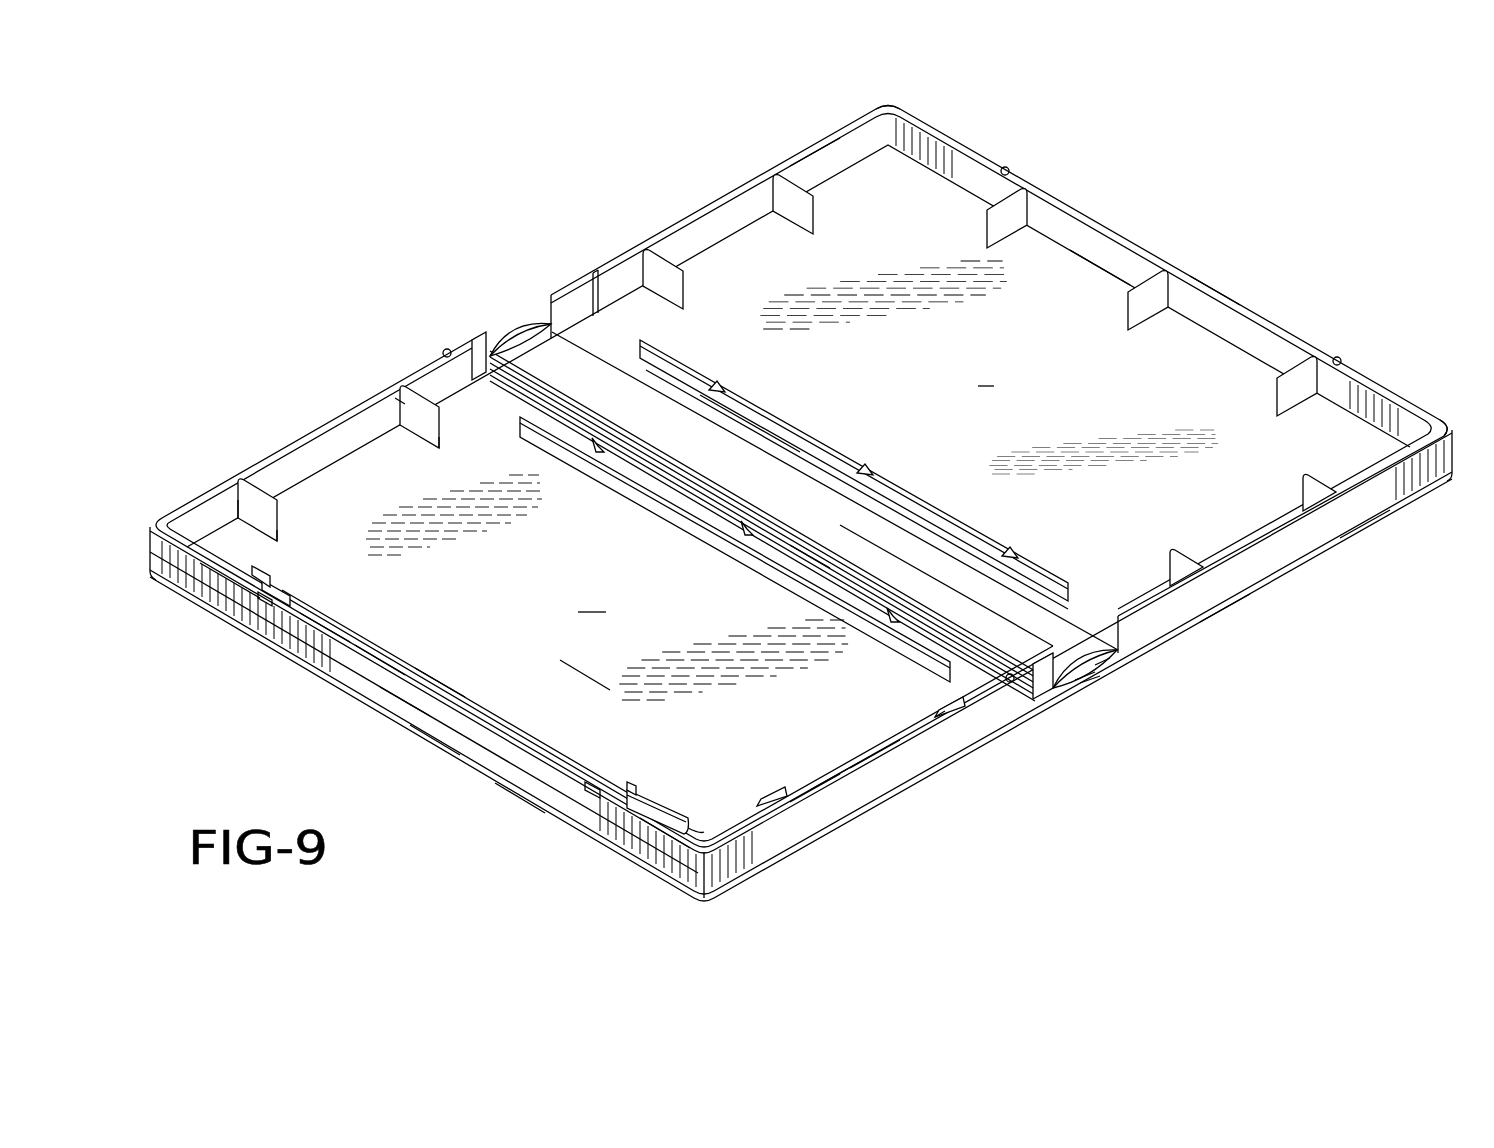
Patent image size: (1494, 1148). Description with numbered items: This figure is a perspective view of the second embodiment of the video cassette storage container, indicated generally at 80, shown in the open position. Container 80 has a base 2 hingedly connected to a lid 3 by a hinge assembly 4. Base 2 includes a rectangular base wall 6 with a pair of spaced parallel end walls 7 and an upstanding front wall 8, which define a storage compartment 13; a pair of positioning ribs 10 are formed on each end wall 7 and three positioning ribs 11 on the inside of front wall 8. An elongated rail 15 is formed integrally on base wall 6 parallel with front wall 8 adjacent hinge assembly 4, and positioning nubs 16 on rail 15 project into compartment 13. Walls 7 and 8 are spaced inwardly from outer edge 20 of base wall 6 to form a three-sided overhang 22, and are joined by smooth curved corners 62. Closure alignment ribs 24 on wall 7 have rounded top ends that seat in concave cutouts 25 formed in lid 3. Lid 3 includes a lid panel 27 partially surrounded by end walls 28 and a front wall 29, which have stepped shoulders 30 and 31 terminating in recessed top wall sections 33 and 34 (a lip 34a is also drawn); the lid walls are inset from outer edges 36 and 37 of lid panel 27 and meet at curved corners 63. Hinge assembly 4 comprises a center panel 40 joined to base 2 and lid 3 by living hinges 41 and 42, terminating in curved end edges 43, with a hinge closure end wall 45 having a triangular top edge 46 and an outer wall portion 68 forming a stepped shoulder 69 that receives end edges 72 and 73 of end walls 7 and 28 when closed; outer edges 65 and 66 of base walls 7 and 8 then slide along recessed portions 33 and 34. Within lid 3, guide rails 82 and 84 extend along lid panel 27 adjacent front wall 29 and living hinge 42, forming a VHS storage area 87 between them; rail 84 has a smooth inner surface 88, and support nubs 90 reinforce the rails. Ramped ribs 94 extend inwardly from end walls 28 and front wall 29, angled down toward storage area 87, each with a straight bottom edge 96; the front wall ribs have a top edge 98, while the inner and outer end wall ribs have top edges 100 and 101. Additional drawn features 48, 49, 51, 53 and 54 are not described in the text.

The base 2 is at (692, 208).
The lid 3 is at (332, 413).
The hinge assembly 4 is at (785, 475).
The base wall 6 is at (986, 374).
The end wall 7 is at (815, 160).
The front wall 8 is at (1385, 405).
The positioning ribs 10 is at (800, 215).
The positioning ribs 11 is at (1000, 230).
The storage compartment 13 is at (1100, 250).
The rail 15 is at (778, 440).
The positioning nubs 16 is at (719, 385).
The outer edge 20 is at (1365, 510).
The overhang 22 is at (1225, 605).
The closure alignment ribs 24 is at (596, 290).
The concave cutouts 25 is at (447, 352).
The lid panel 27 is at (592, 600).
The end wall 28 is at (330, 455).
The front wall 29 is at (668, 860).
The stepped shoulder 30 is at (835, 790).
The stepped shoulder 31 is at (323, 630).
The top wall section 33 is at (870, 765).
The top wall section 34 is at (245, 545).
The front wall lip 34a is at (380, 660).
The outer edge 36 is at (805, 850).
The outer edge 37 is at (520, 800).
The center panel 40 is at (910, 565).
The living hinge 41 is at (888, 520).
The living hinge 42 is at (815, 557).
The curved end edge 43 is at (1085, 675).
The hinge closure end wall 45 is at (520, 335).
The top edge 46 is at (498, 345).
The end wall rim 48 is at (1215, 290).
The wall step 49 is at (402, 700).
The wall step 51 is at (433, 738).
The rim notch 53 is at (1010, 170).
The latch opening 54 is at (265, 595).
The curved corners 62 is at (890, 100).
The curved corners 63 is at (150, 545).
The outer edges 65 is at (735, 185).
The edge 66 is at (935, 120).
The outer wall portion 68 is at (1105, 672).
The stepped shoulder 69 is at (1090, 688).
The end edge 72 is at (552, 300).
The end edge 73 is at (484, 334).
The container 80 is at (1258, 200).
The guide rail 82 is at (440, 682).
The guide rail 84 is at (655, 490).
The VHS storage area 87 is at (590, 678).
The inner surface 88 is at (690, 523).
The support nubs 90 is at (603, 450).
The ramped ribs 94 is at (398, 425).
The bottom edge 96 is at (445, 455).
The top edge 98 is at (265, 575).
The top edges 100 is at (400, 410).
The top edges 101 is at (245, 510).